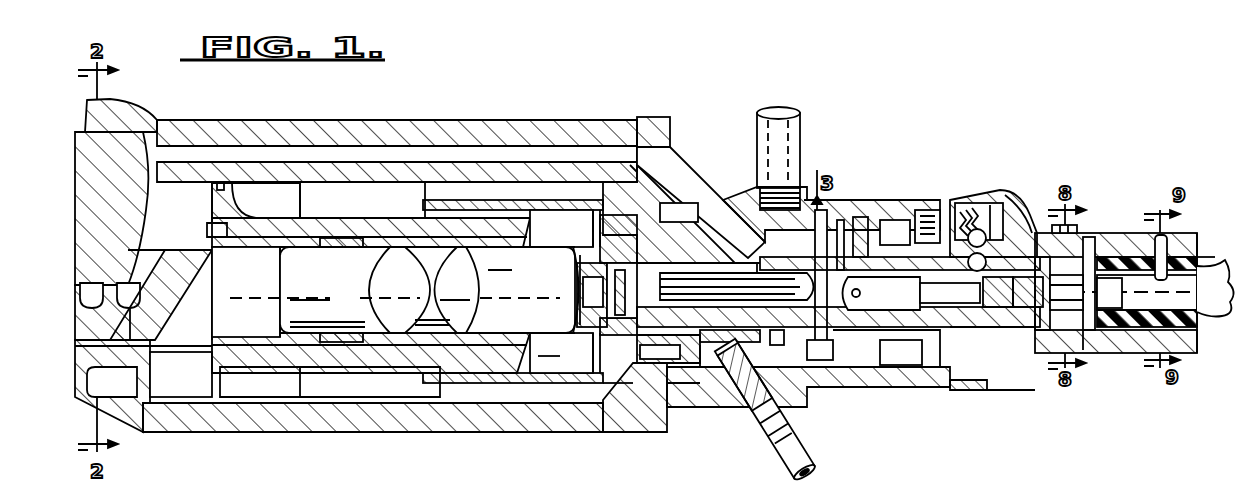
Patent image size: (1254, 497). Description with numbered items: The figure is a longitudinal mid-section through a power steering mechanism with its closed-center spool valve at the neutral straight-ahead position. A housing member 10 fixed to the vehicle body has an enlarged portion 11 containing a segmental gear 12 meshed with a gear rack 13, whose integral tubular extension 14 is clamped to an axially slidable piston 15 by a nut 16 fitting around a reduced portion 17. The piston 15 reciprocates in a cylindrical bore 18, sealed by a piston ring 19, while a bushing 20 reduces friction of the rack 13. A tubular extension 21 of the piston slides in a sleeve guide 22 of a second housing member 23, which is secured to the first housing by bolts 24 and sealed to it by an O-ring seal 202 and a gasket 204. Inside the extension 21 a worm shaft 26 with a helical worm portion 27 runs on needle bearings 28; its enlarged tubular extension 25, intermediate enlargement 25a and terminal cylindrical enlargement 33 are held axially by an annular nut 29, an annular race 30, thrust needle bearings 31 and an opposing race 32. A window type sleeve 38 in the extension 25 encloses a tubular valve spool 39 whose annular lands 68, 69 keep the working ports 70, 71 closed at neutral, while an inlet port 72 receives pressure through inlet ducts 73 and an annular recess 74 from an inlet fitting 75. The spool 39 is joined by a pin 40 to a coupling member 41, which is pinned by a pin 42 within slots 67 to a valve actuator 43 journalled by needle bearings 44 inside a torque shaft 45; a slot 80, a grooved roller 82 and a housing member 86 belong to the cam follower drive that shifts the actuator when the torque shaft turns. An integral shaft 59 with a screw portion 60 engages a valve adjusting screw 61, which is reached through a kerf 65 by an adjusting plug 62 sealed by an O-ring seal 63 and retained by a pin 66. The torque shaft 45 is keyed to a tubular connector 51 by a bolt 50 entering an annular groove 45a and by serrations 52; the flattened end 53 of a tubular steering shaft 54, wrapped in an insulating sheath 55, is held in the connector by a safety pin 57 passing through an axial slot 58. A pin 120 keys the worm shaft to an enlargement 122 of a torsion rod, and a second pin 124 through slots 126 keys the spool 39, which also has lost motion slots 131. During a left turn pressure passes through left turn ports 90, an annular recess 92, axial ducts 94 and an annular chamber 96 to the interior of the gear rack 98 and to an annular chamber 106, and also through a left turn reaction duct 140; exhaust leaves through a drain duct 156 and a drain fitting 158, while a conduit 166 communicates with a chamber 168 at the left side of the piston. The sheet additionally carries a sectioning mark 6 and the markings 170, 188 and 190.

The valve stem passage 6 is at (737, 243).
The housing member 10 is at (506, 120).
The enlarged portion 11 is at (127, 112).
The segmental gear 12 is at (125, 215).
The gear rack 13 is at (142, 330).
The tubular extension 14 is at (228, 255).
The piston 15 is at (202, 200).
The nut 16 is at (198, 366).
The reduced portion 17 is at (215, 205).
The cylindrical bore 18 is at (250, 188).
The piston ring 19 is at (240, 386).
The bushing 20 is at (92, 372).
The tubular extension 21 is at (398, 216).
The sleeve guide 22 is at (470, 205).
The housing member 23 is at (872, 212).
The bolts 24 is at (1175, 486).
The enlarged tubular extension 25 is at (606, 222).
The intermediate enlargement 25a is at (712, 240).
The worm shaft 26 is at (527, 290).
The helical worm portion 27 is at (380, 276).
The needle bearings 28 is at (355, 218).
The annular nut 29 is at (593, 232).
The annular race 30 is at (593, 241).
The needle bearings 31 is at (570, 262).
The opposing race 32 is at (570, 275).
The terminal cylindrical enlargement 33 is at (852, 210).
The window type sleeve 38 is at (668, 238).
The valve spool 39 is at (692, 238).
The pin 40 is at (843, 383).
The coupling member 41 is at (862, 293).
The pin 42 is at (912, 300).
The valve actuator 43 is at (965, 345).
The needle bearings 44 is at (1020, 232).
The torque shaft 45 is at (995, 340).
The annular groove 45a is at (1063, 323).
The bolt 50 is at (1080, 225).
The tubular connector 51 is at (1117, 247).
The serrations 52 is at (1028, 225).
The flattened end 53 is at (1120, 292).
The tubular steering shaft 54 is at (1203, 283).
The insulating sheath 55 is at (1200, 256).
The safety pin 57 is at (1173, 242).
The axial slot 58 is at (1190, 293).
The shaft 59 is at (962, 327).
The screw portion 60 is at (1012, 327).
The valve adjusting screw 61 is at (1029, 290).
The adjusting plug 62 is at (1093, 300).
The O-ring seal 63 is at (1108, 293).
The kerf 65 is at (1033, 325).
The pin 66 is at (1102, 237).
The slots 67 is at (895, 234).
The annular land 68 is at (727, 283).
The annular land 69 is at (727, 284).
The left turn working port 70 is at (640, 242).
The right turn working port 71 is at (766, 278).
The inlet port 72 is at (645, 345).
The inlet ducts 73 is at (681, 386).
The annular recess 74 is at (695, 370).
The inlet fitting 75 is at (753, 423).
The slot 80 is at (928, 210).
The grooved roller 82 is at (978, 238).
The housing member 86 is at (960, 210).
The left turn ports 90 is at (659, 356).
The annular recess 92 is at (615, 378).
The axial ducts 94 is at (587, 208).
The annular chamber 96 is at (549, 348).
The interior of gear rack 98 is at (197, 295).
The annular chamber 106 is at (347, 392).
The pin 120 is at (578, 320).
The enlargement 122 is at (655, 297).
The second pin 124 is at (708, 302).
The slots 126 is at (663, 343).
The lost motion slots 131 is at (845, 215).
The left turn reaction duct 140 is at (782, 360).
The drain duct 156 is at (752, 222).
The drain fitting 158 is at (787, 110).
The conduit 166 is at (328, 150).
The chamber 168 is at (182, 248).
The rod 170 is at (804, 186).
The element 188 is at (433, 491).
The element 190 is at (587, 491).
The O-ring seal 202 is at (640, 138).
The gasket 204 is at (633, 172).